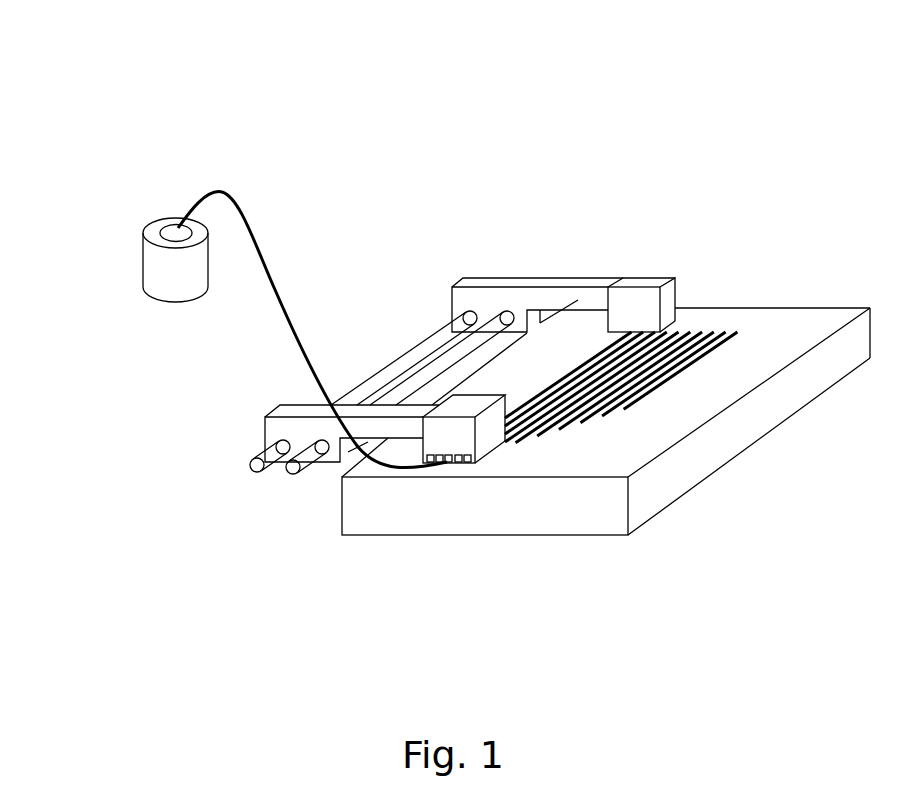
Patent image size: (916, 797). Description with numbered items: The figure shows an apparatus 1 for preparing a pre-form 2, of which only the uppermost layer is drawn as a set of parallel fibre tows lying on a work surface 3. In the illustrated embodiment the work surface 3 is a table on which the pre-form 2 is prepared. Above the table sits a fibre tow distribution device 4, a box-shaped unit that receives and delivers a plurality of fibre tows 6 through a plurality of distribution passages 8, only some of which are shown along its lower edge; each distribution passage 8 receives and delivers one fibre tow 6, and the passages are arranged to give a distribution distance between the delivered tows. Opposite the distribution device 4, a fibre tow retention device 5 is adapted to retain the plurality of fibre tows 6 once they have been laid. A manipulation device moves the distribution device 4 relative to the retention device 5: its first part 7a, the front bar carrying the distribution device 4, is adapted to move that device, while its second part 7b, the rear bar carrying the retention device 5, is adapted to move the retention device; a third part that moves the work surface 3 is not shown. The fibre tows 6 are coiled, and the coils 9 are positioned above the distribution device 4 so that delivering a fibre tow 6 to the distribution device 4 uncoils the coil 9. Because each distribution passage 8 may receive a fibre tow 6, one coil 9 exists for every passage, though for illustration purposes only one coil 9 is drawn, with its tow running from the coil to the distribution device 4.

The apparatus 1 is at (348, 163).
The pre-form 2 is at (718, 366).
The work surface 3 is at (606, 421).
The fibre tow distribution device 4 is at (512, 496).
The fibre tow retention device 5 is at (639, 266).
The fibre tows 6 is at (486, 291).
The first part of the manipulation device 7a is at (317, 403).
The second part of the manipulation device 7b is at (475, 283).
The distribution passages 8 is at (408, 548).
The coils 9 is at (173, 267).